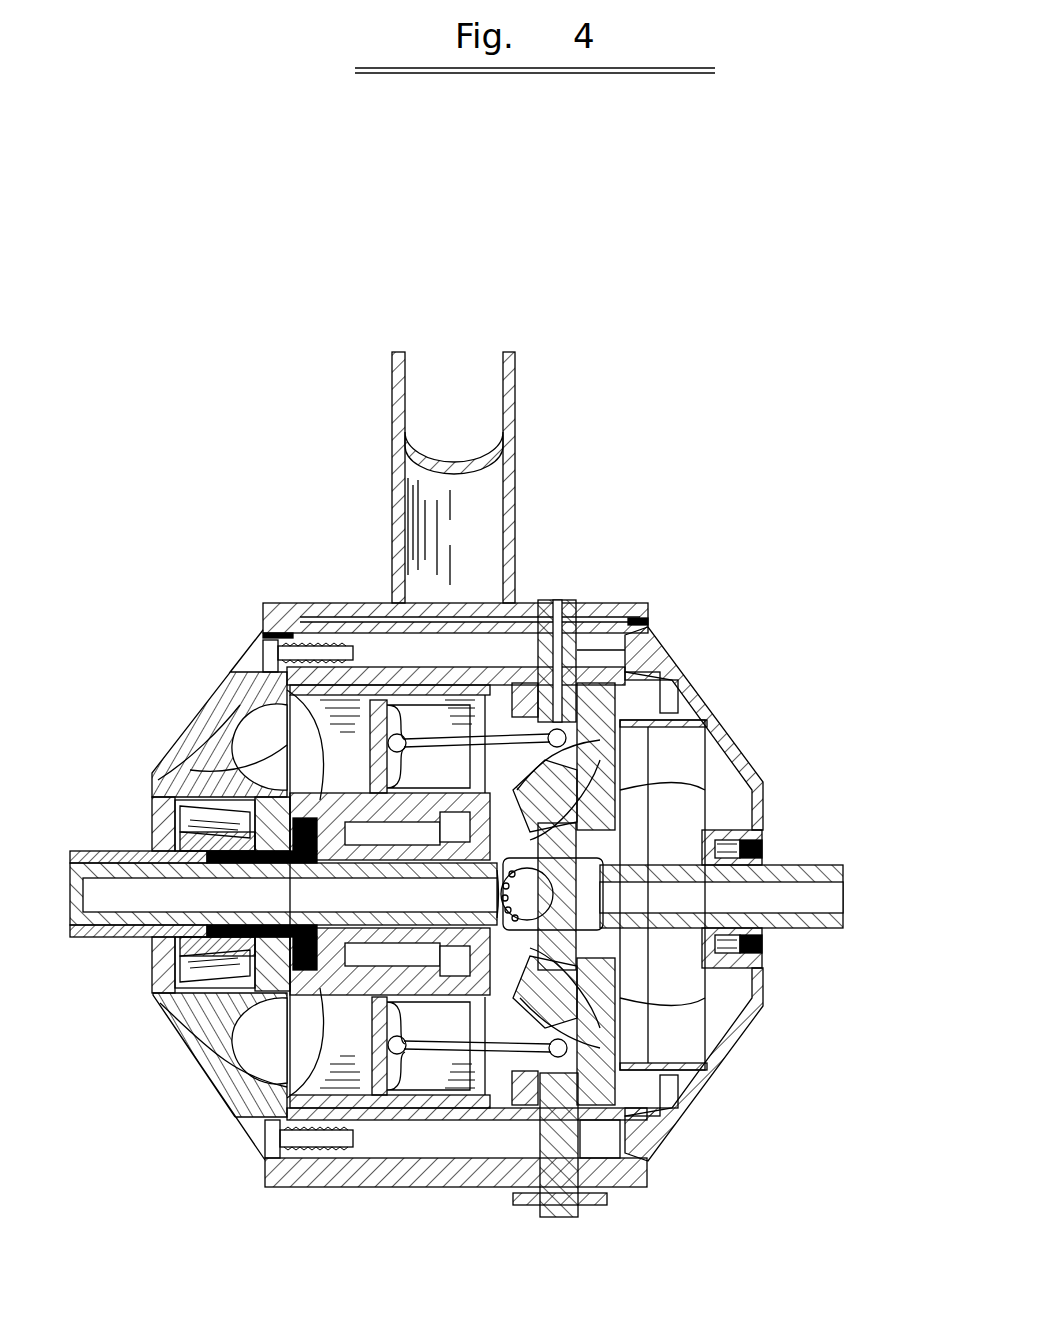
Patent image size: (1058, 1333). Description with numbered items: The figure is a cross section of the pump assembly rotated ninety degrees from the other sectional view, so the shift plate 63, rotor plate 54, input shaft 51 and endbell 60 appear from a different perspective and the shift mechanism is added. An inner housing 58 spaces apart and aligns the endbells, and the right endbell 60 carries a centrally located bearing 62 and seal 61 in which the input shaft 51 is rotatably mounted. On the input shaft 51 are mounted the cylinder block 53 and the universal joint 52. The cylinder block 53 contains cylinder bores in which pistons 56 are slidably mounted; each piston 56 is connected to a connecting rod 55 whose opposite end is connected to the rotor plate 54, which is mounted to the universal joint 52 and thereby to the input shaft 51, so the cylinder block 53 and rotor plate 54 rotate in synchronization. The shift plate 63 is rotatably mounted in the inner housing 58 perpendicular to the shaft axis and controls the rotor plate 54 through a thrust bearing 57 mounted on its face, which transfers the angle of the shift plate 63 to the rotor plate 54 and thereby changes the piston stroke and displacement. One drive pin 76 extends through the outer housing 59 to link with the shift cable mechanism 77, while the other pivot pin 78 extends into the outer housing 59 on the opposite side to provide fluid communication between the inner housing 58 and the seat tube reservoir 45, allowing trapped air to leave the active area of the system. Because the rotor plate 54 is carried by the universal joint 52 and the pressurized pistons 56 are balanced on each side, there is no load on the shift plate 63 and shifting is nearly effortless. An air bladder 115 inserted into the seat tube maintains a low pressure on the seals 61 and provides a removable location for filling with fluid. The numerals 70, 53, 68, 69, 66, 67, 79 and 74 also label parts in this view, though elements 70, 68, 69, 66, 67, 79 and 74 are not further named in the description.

The air bladder 115 is at (500, 478).
The seat tube reservoir 45 is at (478, 512).
The top cover plate 70 is at (268, 614).
The cylinder block 53 is at (296, 716).
The pistons 56 is at (268, 1186).
The housing wall 68 is at (196, 808).
The bearing housing 69 is at (152, 852).
The bearing 66 is at (182, 1015).
The seal 67 is at (210, 1003).
The bearings 62 is at (763, 855).
The inner housing 58 is at (417, 1122).
The outer housing 59 is at (352, 1122).
The connecting rods 55 is at (493, 1120).
The rotor plate 54 is at (612, 1100).
The pivot pin 78 is at (588, 603).
The shift cable mechanism 77 is at (605, 1205).
The ball joint 79 is at (585, 1068).
The thrust bearing 57 is at (615, 1025).
The universal joint 52 is at (704, 792).
The shift plate 63 is at (670, 673).
The right endbell 60 is at (763, 1010).
The drive pin 76 is at (622, 655).
The input shaft 51 is at (763, 848).
The seals 61 is at (763, 862).
The valve plate 74 is at (612, 1124).